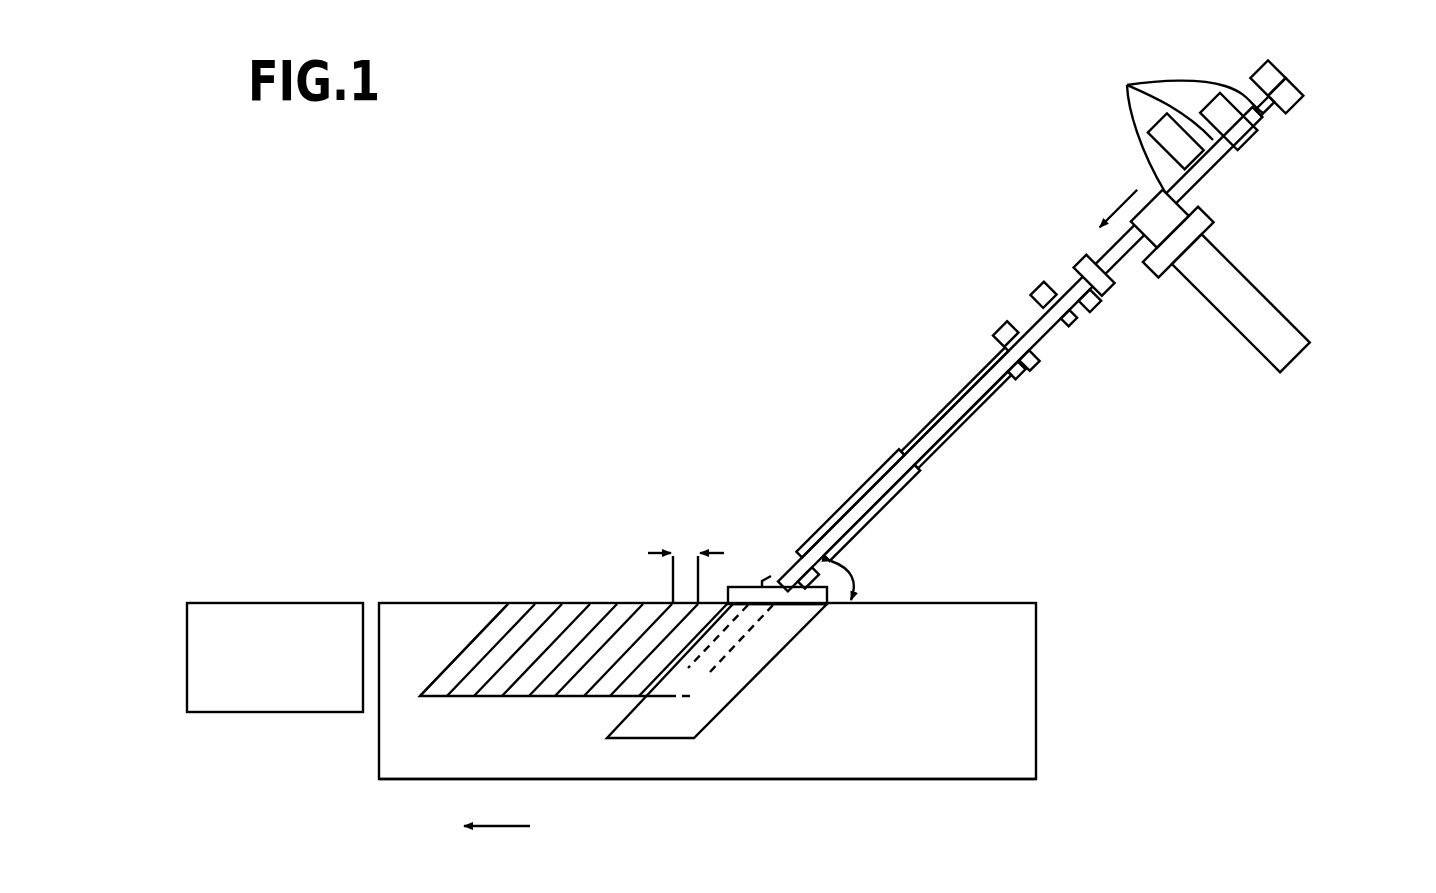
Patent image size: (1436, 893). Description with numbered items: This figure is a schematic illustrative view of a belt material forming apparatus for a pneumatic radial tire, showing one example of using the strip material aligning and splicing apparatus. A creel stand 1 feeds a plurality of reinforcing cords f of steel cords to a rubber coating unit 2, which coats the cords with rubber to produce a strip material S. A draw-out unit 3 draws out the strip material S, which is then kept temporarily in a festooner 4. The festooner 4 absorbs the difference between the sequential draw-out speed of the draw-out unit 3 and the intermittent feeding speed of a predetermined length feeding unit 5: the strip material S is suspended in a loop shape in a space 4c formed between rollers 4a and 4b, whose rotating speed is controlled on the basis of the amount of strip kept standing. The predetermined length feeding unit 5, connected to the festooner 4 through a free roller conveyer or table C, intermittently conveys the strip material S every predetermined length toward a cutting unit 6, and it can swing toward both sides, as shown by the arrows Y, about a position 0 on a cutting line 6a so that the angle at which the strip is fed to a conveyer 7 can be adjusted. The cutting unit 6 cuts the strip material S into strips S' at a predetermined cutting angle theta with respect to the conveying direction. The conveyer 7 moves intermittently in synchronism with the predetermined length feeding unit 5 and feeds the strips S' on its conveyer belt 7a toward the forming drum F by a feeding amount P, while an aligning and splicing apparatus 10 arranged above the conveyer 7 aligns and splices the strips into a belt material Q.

The creel stand 1 is at (1254, 159).
The rubber coating unit 2 is at (1289, 311).
The draw-out unit 3 is at (1078, 252).
The festooner 4 is at (1061, 332).
The roller 4a is at (1024, 367).
The roller 4b is at (1047, 297).
The space 4c is at (1020, 323).
The predetermined length feeding unit 5 is at (887, 525).
The cutting unit 6 is at (745, 585).
The cutting line 6a is at (784, 600).
The conveyer 7 is at (417, 601).
The conveyer belt 7a is at (919, 770).
The aligning and splicing apparatus 10 is at (678, 741).
The position 0 is at (763, 600).